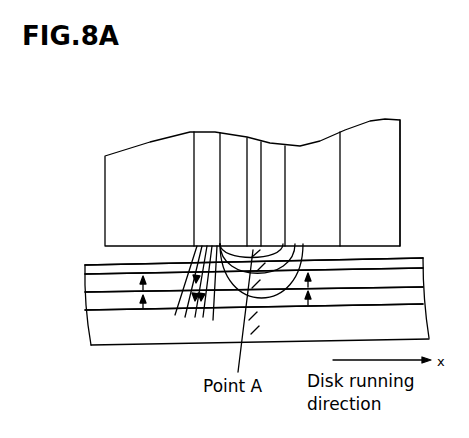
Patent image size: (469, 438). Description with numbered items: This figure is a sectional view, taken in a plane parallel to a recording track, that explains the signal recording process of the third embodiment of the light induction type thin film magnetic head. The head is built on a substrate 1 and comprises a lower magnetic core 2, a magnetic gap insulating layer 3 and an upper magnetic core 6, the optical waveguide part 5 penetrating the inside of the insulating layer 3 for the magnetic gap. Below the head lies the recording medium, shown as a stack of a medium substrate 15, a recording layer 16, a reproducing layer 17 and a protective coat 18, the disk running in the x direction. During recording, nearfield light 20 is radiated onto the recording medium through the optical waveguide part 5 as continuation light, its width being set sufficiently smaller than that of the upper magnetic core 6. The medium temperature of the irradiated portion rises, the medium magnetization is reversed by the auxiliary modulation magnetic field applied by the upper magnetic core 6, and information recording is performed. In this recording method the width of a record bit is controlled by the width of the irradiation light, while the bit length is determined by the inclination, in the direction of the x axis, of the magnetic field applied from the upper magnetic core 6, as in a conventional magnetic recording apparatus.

The substrate 1 is at (358, 182).
The lower magnetic core 2 is at (312, 178).
The magnetic gap insulating layer 3 is at (237, 168).
The optical waveguide part 5 is at (253, 148).
The upper magnetic core 6 is at (202, 147).
The medium substrate 15 is at (103, 323).
The recording layer 16 is at (103, 303).
The reproducing layer 17 is at (102, 285).
The protective coat 18 is at (105, 270).
The nearfield light 20 is at (262, 321).